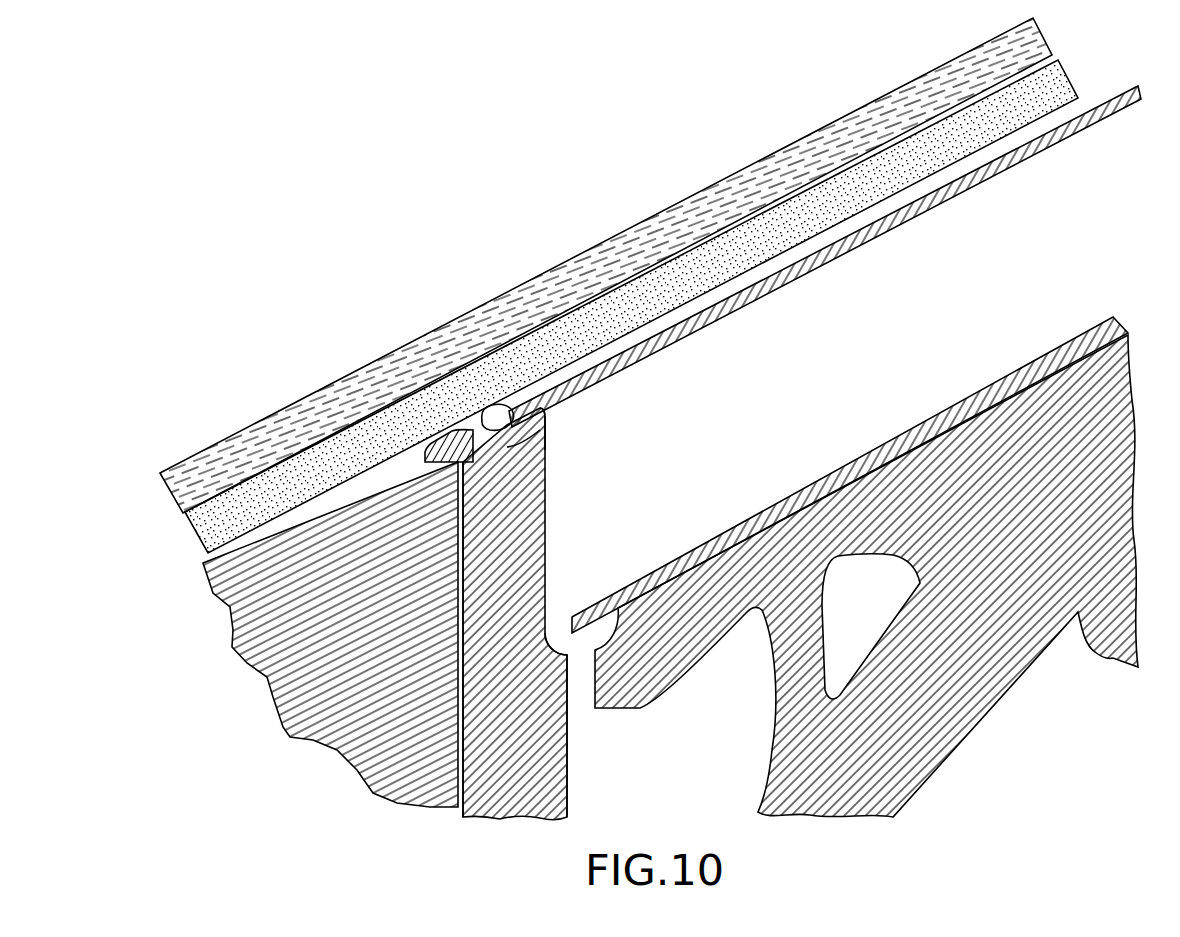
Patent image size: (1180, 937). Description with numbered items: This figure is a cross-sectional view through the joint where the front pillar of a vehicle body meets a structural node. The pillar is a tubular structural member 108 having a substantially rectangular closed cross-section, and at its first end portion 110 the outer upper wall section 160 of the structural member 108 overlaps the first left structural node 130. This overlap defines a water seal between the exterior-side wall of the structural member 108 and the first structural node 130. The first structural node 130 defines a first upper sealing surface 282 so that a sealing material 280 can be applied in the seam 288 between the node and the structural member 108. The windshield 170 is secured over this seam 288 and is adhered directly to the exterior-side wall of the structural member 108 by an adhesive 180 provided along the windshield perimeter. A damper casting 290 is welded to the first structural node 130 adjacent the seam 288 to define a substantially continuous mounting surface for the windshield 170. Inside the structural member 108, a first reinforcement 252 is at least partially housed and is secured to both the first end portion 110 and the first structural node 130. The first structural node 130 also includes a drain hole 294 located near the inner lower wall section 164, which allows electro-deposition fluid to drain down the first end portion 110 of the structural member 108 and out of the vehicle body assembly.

The structural member 108 is at (650, 285).
The first end portion 110 is at (825, 257).
The first left structural node 130 is at (946, 796).
The outer upper wall section 160 is at (790, 281).
The inner lower wall section 164 is at (850, 475).
The windshield 170 is at (500, 291).
The adhesive 180 is at (1063, 85).
The first reinforcement 252 is at (780, 497).
The sealing material 280 is at (548, 413).
The first upper sealing surface 282 is at (530, 440).
The seam 288 is at (543, 457).
The damper casting 290 is at (416, 614).
The drain hole 294 is at (580, 697).